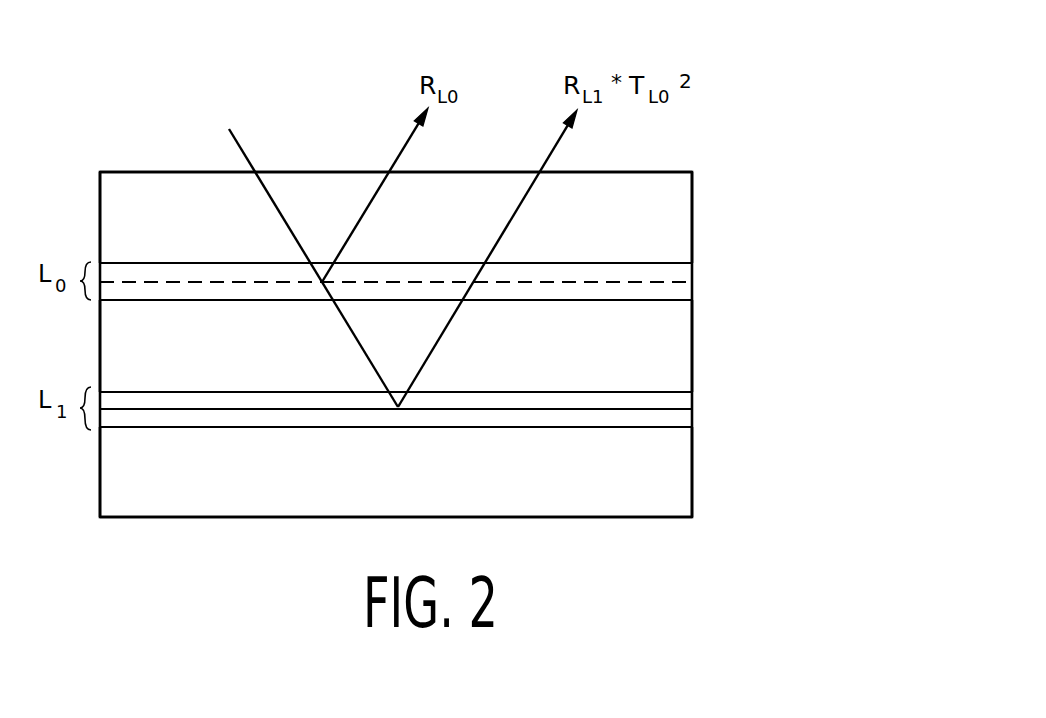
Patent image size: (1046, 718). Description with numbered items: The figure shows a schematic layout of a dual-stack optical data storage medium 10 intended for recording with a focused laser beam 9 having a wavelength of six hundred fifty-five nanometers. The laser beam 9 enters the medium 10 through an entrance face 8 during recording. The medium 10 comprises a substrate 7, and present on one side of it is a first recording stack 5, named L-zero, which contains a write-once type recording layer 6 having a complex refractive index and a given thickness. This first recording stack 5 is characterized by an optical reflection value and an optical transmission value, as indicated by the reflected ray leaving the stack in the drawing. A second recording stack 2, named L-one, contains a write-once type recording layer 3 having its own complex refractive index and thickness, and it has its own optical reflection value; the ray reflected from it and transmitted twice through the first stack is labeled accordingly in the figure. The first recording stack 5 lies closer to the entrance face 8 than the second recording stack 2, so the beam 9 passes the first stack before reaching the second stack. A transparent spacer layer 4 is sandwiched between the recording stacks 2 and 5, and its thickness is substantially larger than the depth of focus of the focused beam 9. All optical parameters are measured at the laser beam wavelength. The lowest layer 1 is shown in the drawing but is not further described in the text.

The substrate 1 is at (668, 489).
The second recording stack 2 is at (668, 419).
The L1 recording layer 3 is at (668, 398).
The transparent spacer layer 4 is at (668, 349).
The first recording stack 5 is at (668, 286).
The L0 recording layer 6 is at (668, 283).
The substrate 7 is at (668, 208).
The entrance face 8 is at (668, 172).
The laser beam 9 is at (240, 139).
The dual-stack optical data storage medium 10 is at (757, 98).